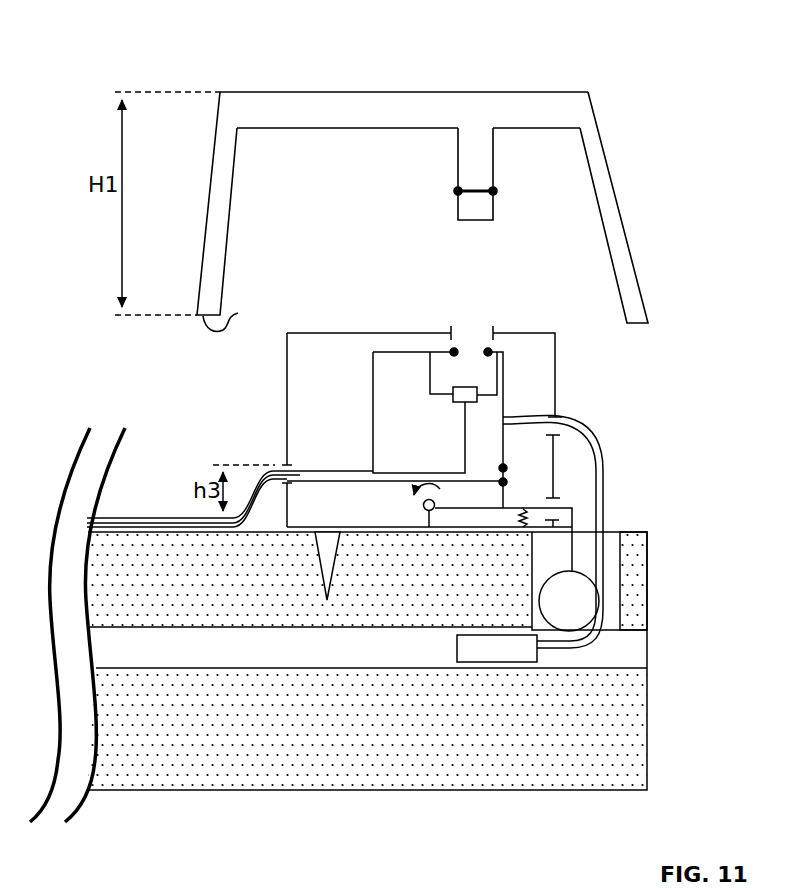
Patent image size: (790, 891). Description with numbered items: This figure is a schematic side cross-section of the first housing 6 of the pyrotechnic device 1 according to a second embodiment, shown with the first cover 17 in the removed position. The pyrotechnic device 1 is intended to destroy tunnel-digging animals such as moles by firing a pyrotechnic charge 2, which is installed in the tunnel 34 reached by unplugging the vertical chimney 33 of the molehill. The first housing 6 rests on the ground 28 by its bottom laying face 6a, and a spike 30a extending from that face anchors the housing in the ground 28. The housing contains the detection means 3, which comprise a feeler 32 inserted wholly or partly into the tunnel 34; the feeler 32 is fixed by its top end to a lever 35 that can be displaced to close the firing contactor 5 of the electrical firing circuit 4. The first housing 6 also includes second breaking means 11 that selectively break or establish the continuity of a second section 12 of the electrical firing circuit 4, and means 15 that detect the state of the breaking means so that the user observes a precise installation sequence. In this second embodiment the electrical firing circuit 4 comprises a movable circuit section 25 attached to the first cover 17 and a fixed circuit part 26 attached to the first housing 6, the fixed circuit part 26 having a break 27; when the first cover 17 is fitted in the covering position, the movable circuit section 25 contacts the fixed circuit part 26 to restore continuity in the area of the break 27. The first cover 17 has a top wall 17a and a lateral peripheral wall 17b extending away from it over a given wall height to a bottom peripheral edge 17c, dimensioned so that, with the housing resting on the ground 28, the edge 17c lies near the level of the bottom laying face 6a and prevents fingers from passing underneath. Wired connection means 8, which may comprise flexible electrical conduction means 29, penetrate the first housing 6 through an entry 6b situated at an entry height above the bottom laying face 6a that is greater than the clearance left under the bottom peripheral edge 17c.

The pyrotechnic device 1 is at (664, 368).
The pyrotechnic charge 2 is at (504, 662).
The detection means 3 is at (580, 521).
The electrical firing circuit 4 is at (515, 364).
The firing contactor 5 is at (506, 467).
The first housing 6 is at (327, 329).
The bottom laying face 6a is at (407, 535).
The entry 6b is at (278, 462).
The wired connection means 8 is at (135, 517).
The second breaking means 11 is at (444, 346).
The second section of the electrical firing circuit 12 is at (456, 362).
The means for detecting the state of the first breaking means 15 is at (453, 398).
The first cover 17 is at (480, 84).
The top wall 17a is at (395, 112).
The lateral peripheral wall 17b is at (210, 222).
The bottom peripheral edge 17c is at (238, 313).
The movable circuit section 25 is at (463, 194).
The fixed circuit part 26 is at (398, 349).
The break 27 is at (477, 340).
The ground 28 is at (637, 534).
The flexible electrical conduction means 29 is at (175, 481).
The spike 30a is at (330, 562).
The feeler 32 is at (574, 548).
The vertical chimney 33 is at (568, 567).
The tunnel 34 is at (170, 659).
The lever 35 is at (565, 510).